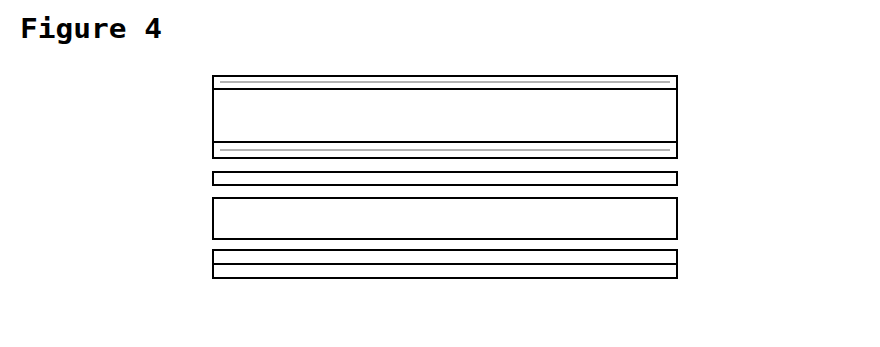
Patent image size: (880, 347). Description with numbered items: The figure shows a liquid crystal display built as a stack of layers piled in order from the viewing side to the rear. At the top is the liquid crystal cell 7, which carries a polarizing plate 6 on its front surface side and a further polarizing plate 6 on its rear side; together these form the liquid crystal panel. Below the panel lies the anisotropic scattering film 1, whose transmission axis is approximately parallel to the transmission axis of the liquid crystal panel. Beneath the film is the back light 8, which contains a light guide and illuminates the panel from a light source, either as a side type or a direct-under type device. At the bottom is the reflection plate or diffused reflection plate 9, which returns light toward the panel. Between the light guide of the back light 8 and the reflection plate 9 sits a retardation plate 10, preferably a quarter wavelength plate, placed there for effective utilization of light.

The liquid crystal cell 7 is at (250, 112).
The polarizing plate 6 is at (663, 81).
The anisotropic scattering film 1 is at (668, 177).
The back light 8 is at (670, 217).
The reflection plate or diffused reflection plate 9 is at (672, 269).
The retardation plate 10 is at (235, 258).